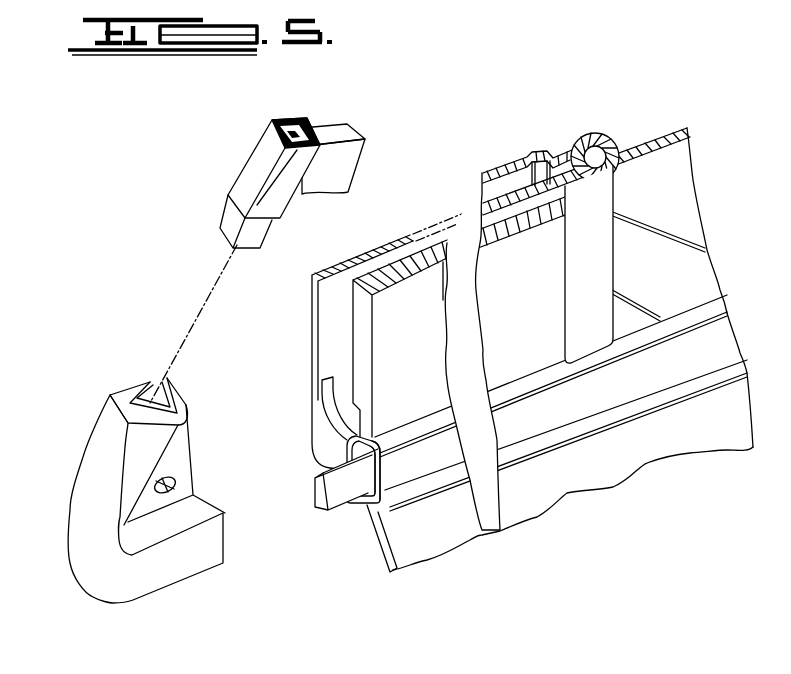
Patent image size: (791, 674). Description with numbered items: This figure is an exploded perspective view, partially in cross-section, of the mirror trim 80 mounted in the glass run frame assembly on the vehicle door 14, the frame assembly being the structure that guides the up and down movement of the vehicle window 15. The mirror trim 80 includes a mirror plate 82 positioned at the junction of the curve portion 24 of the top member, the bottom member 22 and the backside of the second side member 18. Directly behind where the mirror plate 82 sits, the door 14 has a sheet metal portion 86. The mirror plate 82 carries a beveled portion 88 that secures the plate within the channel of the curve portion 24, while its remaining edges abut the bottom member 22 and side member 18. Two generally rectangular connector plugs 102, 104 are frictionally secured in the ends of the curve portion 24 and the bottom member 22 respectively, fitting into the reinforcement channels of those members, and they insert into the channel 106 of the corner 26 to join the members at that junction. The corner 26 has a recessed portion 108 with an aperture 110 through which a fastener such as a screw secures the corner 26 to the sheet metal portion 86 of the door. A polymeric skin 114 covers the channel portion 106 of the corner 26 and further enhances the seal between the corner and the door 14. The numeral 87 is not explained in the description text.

The vehicle door 14 is at (635, 466).
The vehicle window 15 is at (670, 190).
The second side member 18 is at (615, 281).
The bottom member 22 is at (394, 502).
The curve portion 24 is at (257, 141).
The corner 26 is at (163, 494).
The mirror trim 80 is at (341, 497).
The mirror plate 82 is at (355, 137).
The sheet metal portion 86 is at (495, 200).
The strap 87 is at (535, 306).
The beveled portion 88 is at (312, 124).
The connector plug 102 is at (256, 246).
The connector plug 104 is at (330, 510).
The channel 106 is at (155, 403).
The recessed portion 108 is at (178, 457).
The aperture 110 is at (174, 485).
The polymeric skin 114 is at (105, 423).